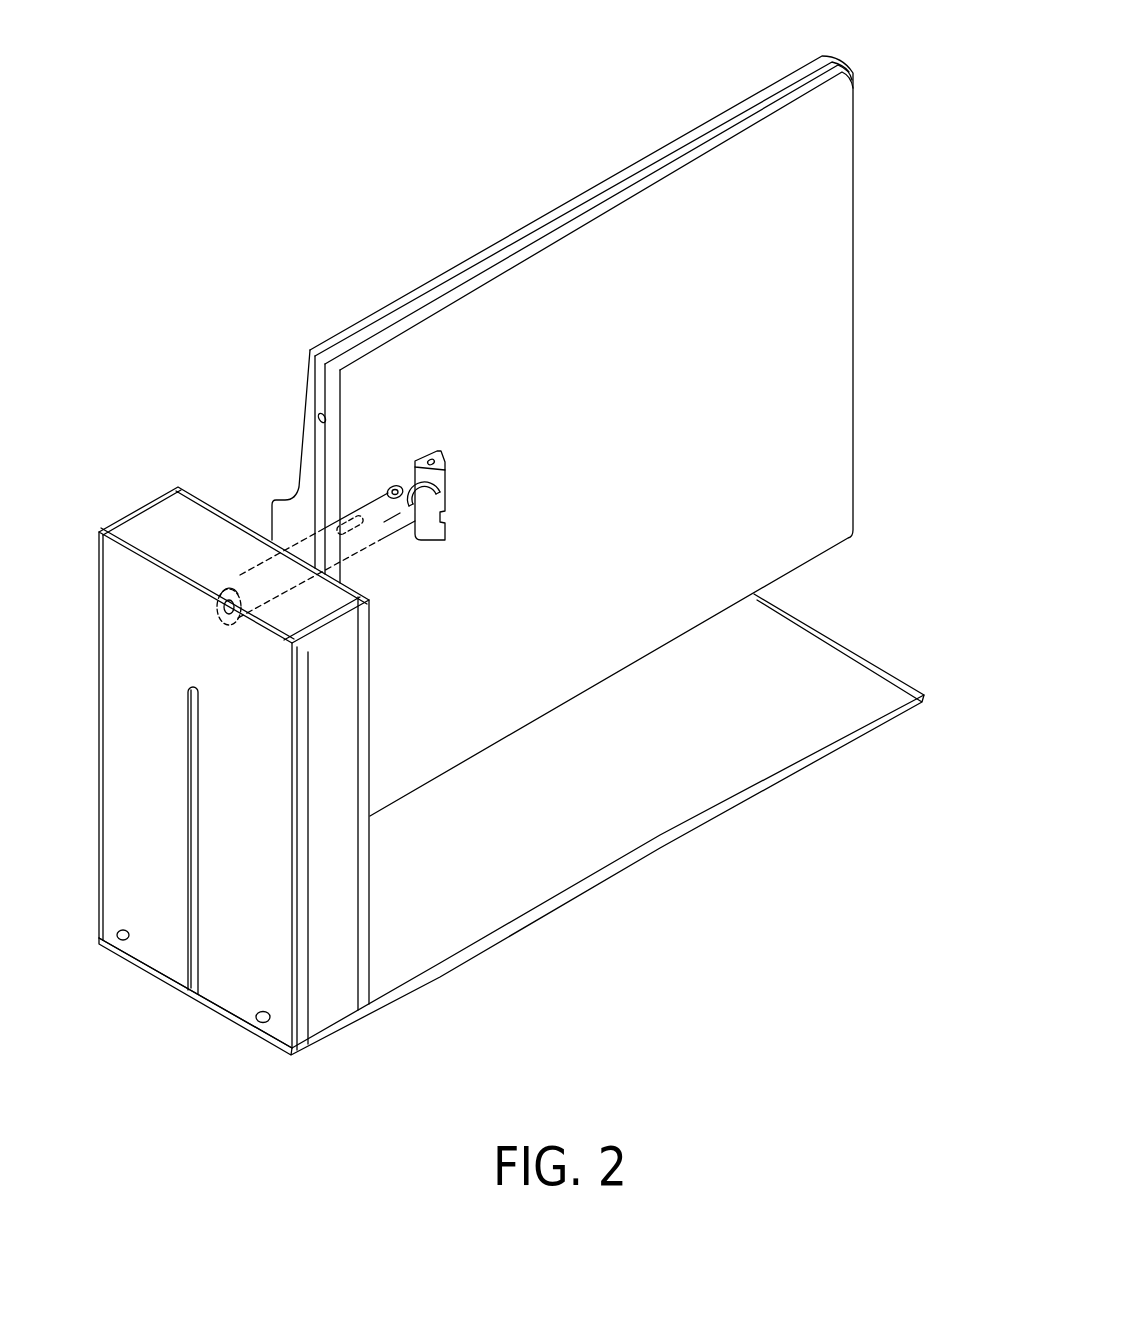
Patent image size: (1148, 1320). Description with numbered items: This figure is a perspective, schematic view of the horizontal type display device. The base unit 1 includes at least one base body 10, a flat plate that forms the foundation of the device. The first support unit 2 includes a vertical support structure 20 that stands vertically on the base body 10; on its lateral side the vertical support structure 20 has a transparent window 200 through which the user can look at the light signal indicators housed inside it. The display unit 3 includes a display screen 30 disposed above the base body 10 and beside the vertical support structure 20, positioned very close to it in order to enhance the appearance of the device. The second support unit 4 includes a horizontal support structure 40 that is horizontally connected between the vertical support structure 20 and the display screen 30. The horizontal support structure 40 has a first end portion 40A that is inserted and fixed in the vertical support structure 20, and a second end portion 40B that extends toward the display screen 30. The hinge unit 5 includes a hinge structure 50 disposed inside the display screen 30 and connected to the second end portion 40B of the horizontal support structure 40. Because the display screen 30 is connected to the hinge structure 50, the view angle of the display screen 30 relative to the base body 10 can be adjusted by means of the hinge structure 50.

The base unit 1 is at (511, 802).
The base body 10 is at (838, 694).
The first support unit 2 is at (234, 724).
The vertical support structure 20 is at (234, 742).
The transparent window 200 is at (193, 948).
The display unit 3 is at (562, 436).
The display screen 30 is at (598, 203).
The second support unit 4 is at (321, 502).
The horizontal support structure 40 is at (321, 519).
The first end portion 40A is at (233, 583).
The second end portion 40B is at (397, 522).
The hinge unit 5 is at (443, 456).
The hinge structure 50 is at (445, 488).